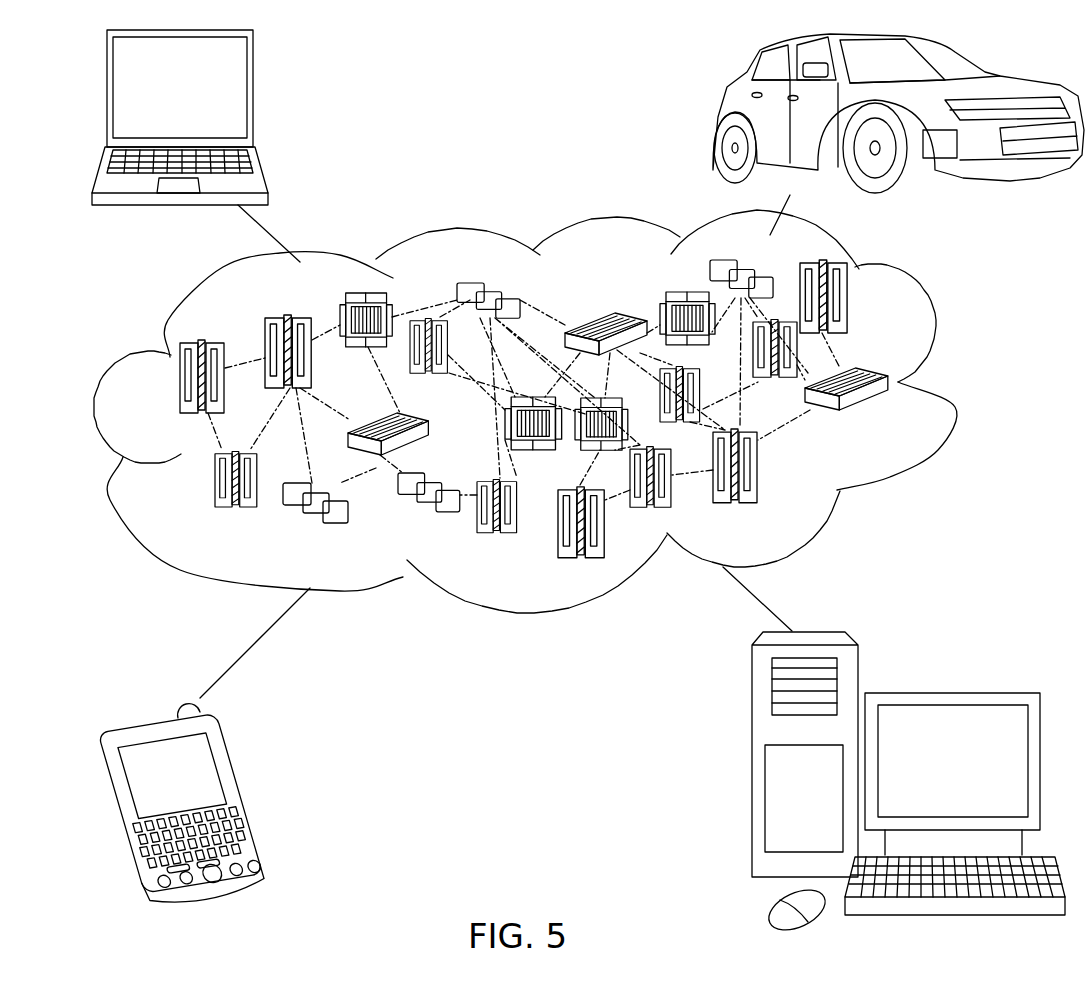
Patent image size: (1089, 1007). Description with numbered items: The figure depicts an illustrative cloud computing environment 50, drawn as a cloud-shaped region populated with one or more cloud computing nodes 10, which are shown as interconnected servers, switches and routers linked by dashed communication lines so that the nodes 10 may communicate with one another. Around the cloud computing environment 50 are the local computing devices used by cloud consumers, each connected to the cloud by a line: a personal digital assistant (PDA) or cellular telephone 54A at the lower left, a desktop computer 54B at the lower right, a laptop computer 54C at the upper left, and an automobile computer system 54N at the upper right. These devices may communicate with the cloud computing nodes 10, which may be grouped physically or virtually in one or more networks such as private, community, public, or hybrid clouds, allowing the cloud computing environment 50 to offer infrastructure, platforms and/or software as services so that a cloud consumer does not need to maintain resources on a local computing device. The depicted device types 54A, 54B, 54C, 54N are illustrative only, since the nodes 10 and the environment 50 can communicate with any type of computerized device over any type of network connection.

The cloud computing nodes 10 is at (888, 418).
The cloud computing environment 50 is at (952, 390).
The personal digital assistant (PDA) or cellular telephone 54A is at (240, 792).
The desktop computer 54B is at (950, 693).
The laptop computer 54C is at (252, 97).
The automobile computer system 54N is at (720, 113).